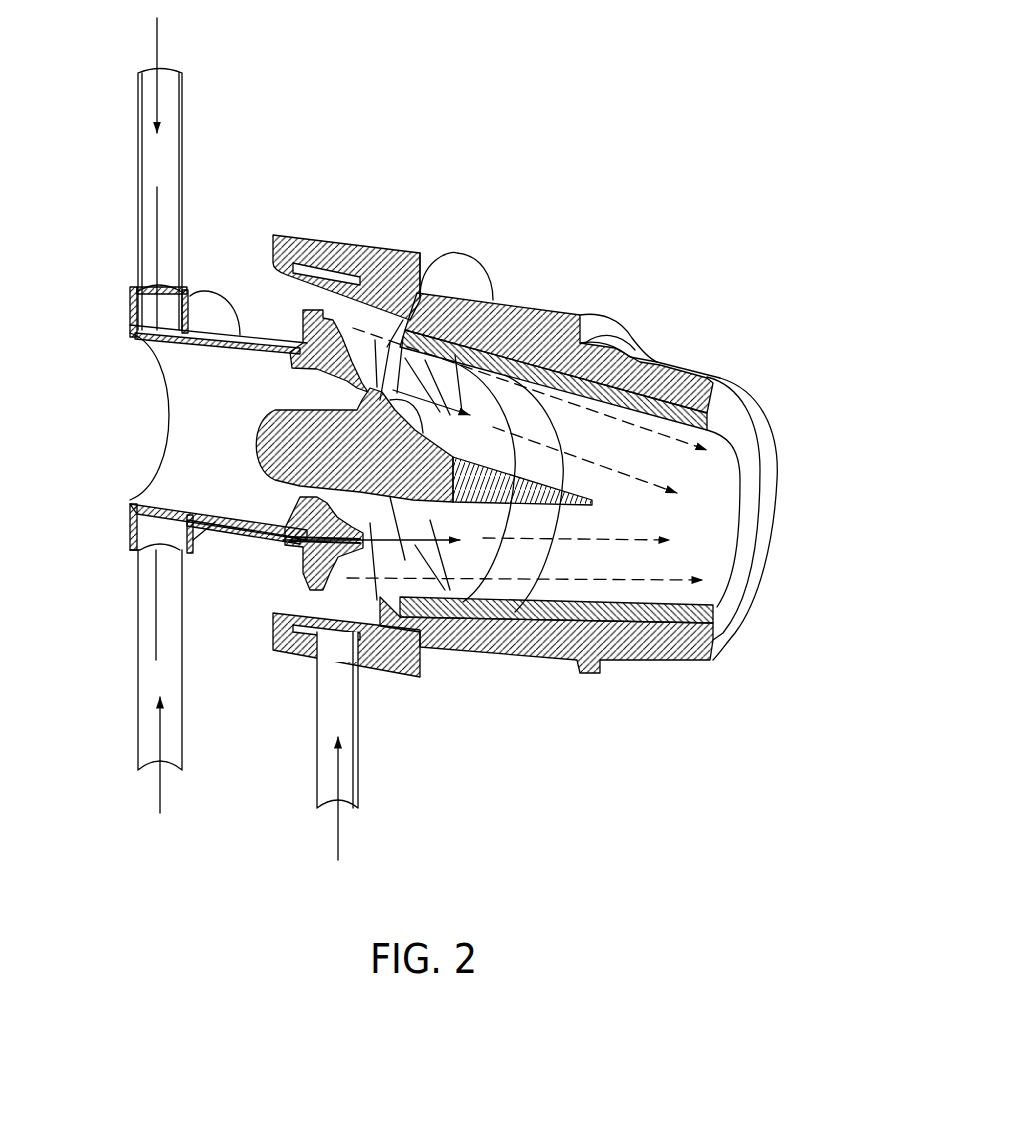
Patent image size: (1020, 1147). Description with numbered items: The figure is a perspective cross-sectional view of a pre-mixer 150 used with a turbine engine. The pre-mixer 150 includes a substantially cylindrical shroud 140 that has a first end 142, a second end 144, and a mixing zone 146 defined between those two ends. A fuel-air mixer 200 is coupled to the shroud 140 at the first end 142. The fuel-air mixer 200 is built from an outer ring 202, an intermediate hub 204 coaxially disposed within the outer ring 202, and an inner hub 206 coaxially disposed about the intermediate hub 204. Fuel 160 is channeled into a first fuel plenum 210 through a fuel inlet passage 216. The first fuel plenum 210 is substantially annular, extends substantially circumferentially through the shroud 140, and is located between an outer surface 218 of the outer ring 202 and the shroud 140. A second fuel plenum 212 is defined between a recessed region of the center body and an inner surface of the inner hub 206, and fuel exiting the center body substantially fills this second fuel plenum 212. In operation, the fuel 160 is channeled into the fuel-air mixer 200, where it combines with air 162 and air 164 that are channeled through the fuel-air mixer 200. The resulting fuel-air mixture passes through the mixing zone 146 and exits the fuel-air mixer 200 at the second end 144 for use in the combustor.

The shroud 140 is at (575, 313).
The first end 142 is at (313, 173).
The second end 144 is at (770, 383).
The mixing zone 146 is at (672, 530).
The pre-mixer 150 is at (717, 108).
The fuel 160 is at (342, 840).
The air 162 is at (302, 303).
The air 164 is at (157, 413).
The fuel-air mixer 200 is at (428, 325).
The outer ring 202 is at (268, 252).
The intermediate hub 204 is at (520, 652).
The inner hub 206 is at (446, 650).
The first fuel plenum 210 is at (367, 262).
The second fuel plenum 212 is at (412, 258).
The fuel inlet passage 216 is at (360, 747).
The outer surface 218 is at (384, 668).